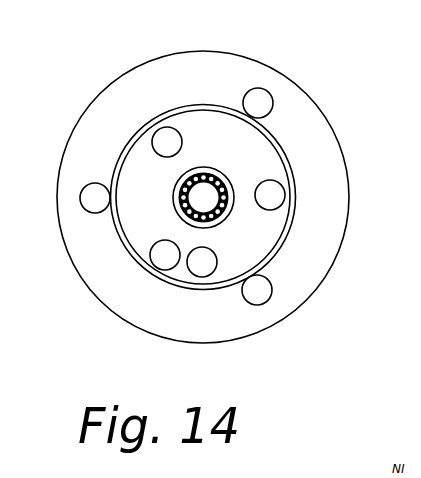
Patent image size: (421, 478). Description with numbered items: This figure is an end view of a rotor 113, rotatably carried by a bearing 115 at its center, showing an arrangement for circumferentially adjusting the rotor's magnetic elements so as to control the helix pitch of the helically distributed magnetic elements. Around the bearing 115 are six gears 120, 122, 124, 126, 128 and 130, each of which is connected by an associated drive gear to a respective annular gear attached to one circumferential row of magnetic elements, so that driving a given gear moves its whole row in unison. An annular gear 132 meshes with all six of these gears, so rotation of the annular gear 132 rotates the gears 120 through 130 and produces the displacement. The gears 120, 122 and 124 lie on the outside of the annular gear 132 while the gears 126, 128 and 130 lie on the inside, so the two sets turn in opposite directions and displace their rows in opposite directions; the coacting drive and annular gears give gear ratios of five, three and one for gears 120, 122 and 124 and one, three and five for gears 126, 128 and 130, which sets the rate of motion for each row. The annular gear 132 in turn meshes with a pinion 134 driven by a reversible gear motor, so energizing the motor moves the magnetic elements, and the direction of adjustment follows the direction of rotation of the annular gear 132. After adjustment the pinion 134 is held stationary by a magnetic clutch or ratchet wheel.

The rotor 113 is at (350, 210).
The bearing 115 is at (207, 178).
The gear 120 is at (258, 89).
The gear 122 is at (262, 298).
The gear 124 is at (87, 193).
The gear 126 is at (272, 190).
The gear 128 is at (160, 262).
The gear 130 is at (167, 131).
The annular gear 132 is at (122, 238).
The pinion 134 is at (202, 273).